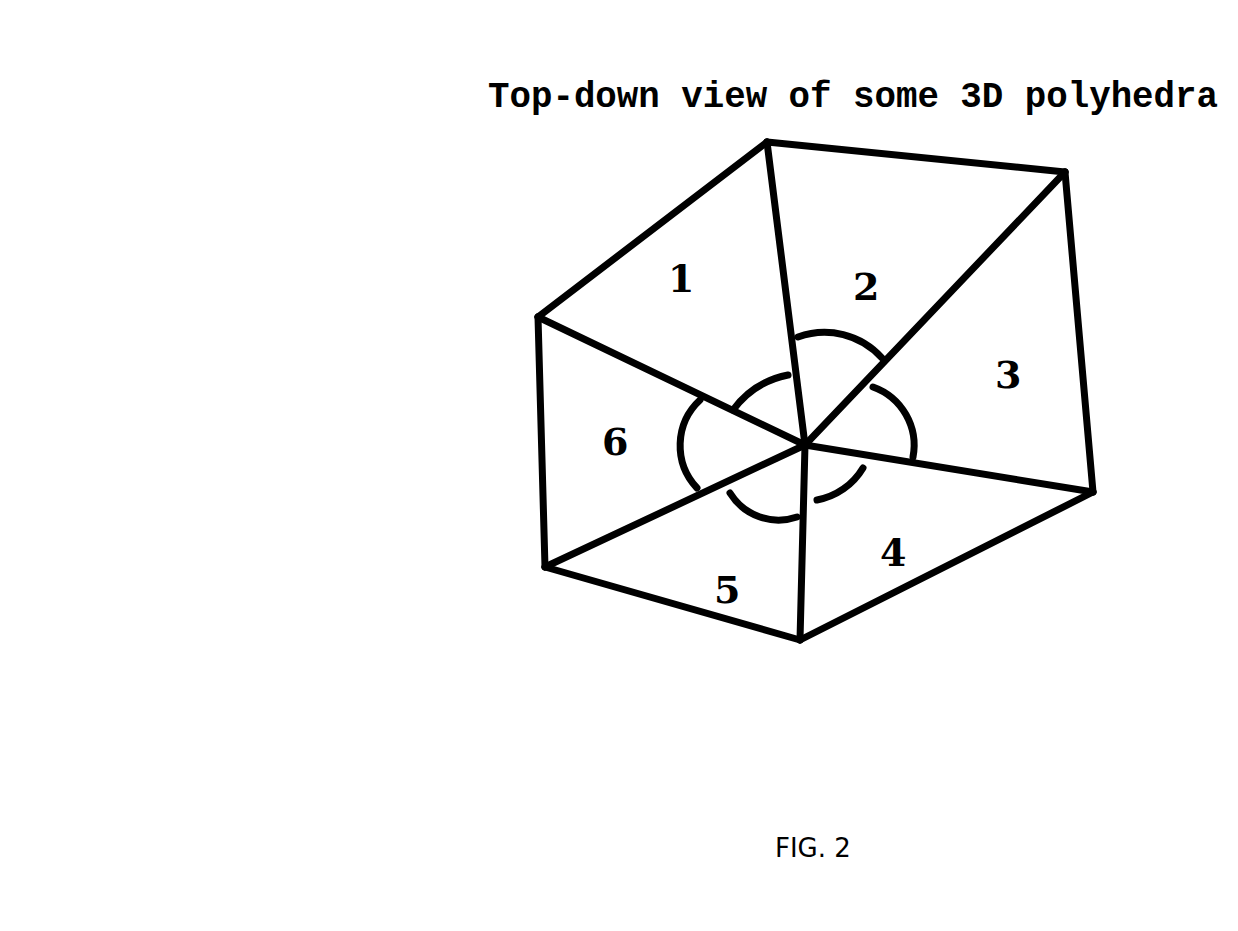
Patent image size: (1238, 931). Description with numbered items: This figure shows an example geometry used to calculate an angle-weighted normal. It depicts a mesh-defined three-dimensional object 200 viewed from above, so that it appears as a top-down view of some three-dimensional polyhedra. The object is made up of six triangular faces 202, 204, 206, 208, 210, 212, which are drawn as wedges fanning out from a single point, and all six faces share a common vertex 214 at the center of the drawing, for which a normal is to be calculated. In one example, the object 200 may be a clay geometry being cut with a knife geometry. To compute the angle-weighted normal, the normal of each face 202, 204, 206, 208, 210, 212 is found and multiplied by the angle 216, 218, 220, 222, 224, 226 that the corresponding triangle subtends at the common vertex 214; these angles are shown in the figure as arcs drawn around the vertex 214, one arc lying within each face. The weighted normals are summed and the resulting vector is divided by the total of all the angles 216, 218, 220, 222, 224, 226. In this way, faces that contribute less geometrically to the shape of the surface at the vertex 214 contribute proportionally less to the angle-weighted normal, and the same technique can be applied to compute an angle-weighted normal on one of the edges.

The mesh-defined 3D object 200 is at (324, 75).
The face 202 is at (653, 222).
The face 204 is at (908, 151).
The face 206 is at (1078, 285).
The face 208 is at (966, 562).
The face 210 is at (650, 600).
The face 212 is at (540, 423).
The common vertex 214 is at (802, 442).
The angle 216 is at (778, 370).
The angle 218 is at (855, 340).
The angle 220 is at (915, 430).
The angle 222 is at (864, 470).
The angle 224 is at (730, 495).
The angle 226 is at (680, 427).